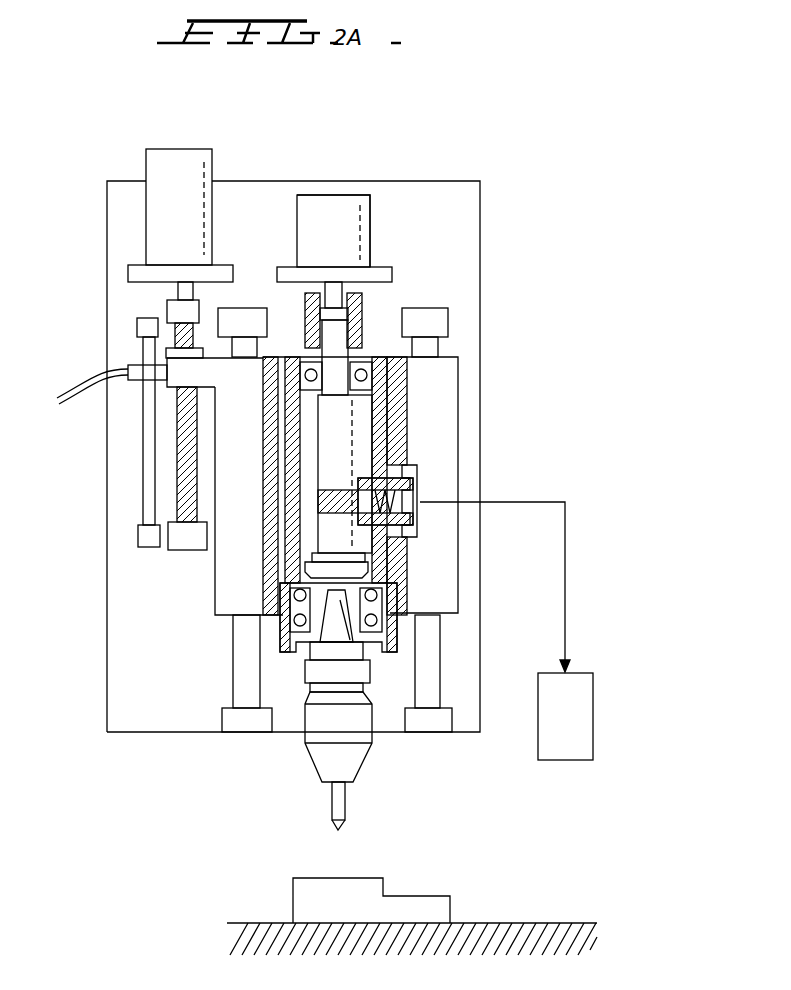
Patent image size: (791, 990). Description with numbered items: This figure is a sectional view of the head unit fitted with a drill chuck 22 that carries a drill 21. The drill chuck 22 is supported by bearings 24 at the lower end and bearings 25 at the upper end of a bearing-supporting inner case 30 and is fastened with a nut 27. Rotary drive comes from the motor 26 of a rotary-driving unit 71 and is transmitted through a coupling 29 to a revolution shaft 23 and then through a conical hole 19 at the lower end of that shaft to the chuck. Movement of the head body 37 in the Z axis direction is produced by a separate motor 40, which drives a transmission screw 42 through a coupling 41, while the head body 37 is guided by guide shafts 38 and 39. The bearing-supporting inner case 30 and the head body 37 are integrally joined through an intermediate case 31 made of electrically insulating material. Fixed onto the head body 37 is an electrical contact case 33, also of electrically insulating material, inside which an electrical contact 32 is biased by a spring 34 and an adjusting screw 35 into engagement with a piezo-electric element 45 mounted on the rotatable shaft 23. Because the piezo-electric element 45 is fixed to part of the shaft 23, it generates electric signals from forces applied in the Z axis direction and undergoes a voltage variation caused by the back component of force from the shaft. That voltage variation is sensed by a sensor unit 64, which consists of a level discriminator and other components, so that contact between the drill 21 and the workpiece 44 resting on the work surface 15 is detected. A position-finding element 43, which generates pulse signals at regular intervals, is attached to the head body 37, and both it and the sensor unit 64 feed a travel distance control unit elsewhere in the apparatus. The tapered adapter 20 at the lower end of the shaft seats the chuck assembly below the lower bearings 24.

The work surface 15 is at (508, 922).
The conical hole 19 is at (310, 647).
The chuck adapter 20 is at (338, 628).
The drill 21 is at (347, 808).
The drill chuck 22 is at (365, 765).
The revolution shaft 23 is at (325, 437).
The bearings 24 is at (396, 598).
The bearings 25 is at (370, 372).
The motor 26 is at (318, 203).
The nut 27 is at (372, 568).
The coupling 29 is at (365, 308).
The bearing-supporting inner case 30 is at (378, 430).
The intermediate case 31 is at (400, 395).
The electrical contact 32 is at (417, 455).
The electrical contact case 33 is at (400, 527).
The spring 34 is at (403, 490).
The adjusting screw 35 is at (400, 500).
The head body 37 is at (452, 593).
The guide shaft 38 is at (445, 690).
The guide shaft 39 is at (233, 663).
The motor 40 is at (212, 166).
The coupling 41 is at (167, 310).
The transmission screw 42 is at (175, 447).
The position-finding element 43 is at (128, 367).
The workpiece 44 is at (352, 876).
The piezo-electric element 45 is at (330, 500).
The sensor unit 64 is at (595, 727).
The rotary-driving unit 71 is at (352, 205).